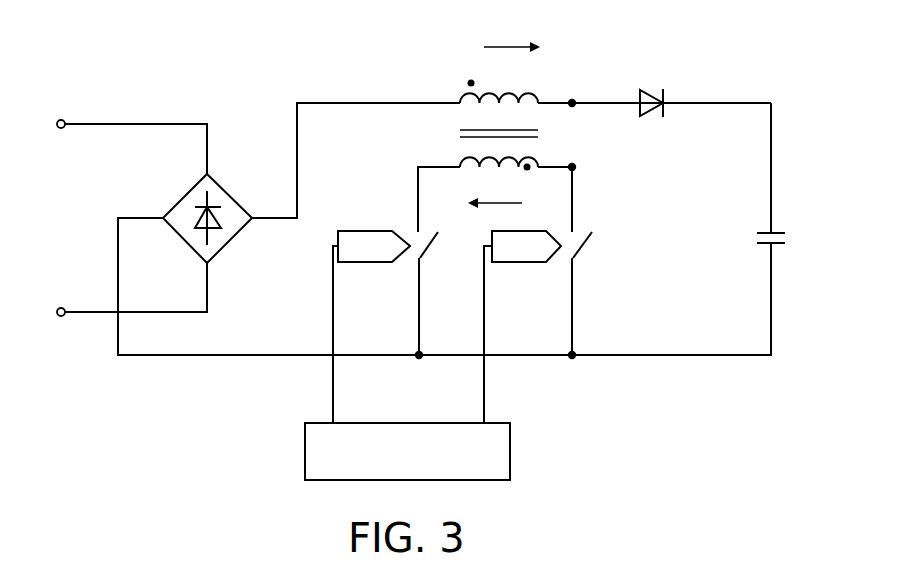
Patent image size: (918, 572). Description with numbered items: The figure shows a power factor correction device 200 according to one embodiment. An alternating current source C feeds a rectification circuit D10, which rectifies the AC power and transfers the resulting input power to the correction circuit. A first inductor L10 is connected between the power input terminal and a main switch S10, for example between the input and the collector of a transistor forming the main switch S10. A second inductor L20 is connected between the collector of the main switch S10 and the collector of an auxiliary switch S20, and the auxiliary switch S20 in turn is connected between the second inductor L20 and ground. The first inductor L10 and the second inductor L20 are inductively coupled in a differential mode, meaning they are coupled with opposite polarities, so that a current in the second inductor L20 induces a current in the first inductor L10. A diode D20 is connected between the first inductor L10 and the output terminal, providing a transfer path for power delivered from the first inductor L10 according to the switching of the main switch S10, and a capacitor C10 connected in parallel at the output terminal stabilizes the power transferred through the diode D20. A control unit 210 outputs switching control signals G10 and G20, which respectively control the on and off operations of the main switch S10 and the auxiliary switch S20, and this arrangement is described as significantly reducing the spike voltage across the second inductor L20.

The power factor correction device 200 is at (203, 48).
The control unit 210 is at (510, 448).
The AC input C is at (32, 220).
The rectification circuit D10 is at (195, 217).
The first inductor L10 is at (499, 84).
The second inductor L20 is at (478, 155).
The diode D20 is at (652, 88).
The capacitor C10 is at (793, 179).
The main switch S10 is at (598, 261).
The auxiliary switch S20 is at (444, 293).
The switching control signal G10 is at (522, 327).
The switching control signal G20 is at (371, 327).